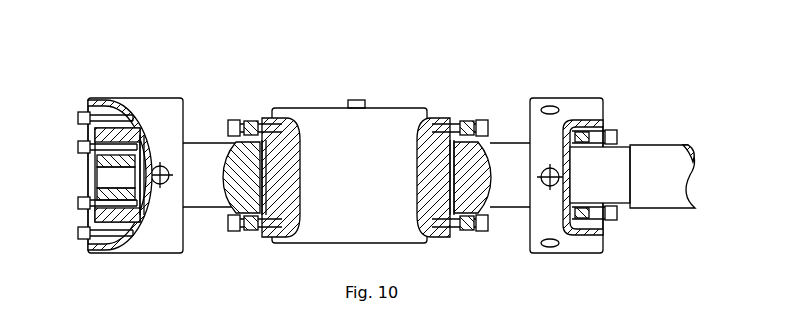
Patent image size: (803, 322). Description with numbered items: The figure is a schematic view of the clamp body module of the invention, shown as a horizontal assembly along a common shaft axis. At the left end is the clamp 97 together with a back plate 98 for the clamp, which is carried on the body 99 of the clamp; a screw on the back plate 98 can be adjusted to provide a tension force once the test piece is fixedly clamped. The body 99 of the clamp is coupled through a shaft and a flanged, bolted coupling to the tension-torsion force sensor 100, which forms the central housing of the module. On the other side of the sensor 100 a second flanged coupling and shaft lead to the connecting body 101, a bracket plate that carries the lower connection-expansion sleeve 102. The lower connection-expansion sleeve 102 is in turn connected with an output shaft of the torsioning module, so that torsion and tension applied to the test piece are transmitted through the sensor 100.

The clamp 97 is at (99, 100).
The back plate for the clamp 98 is at (104, 97).
The body of the clamp 99 is at (160, 113).
The tension-torsion force sensor 100 is at (332, 133).
The connecting body 101 is at (503, 152).
The lower connection-expansion sleeve 102 is at (605, 130).